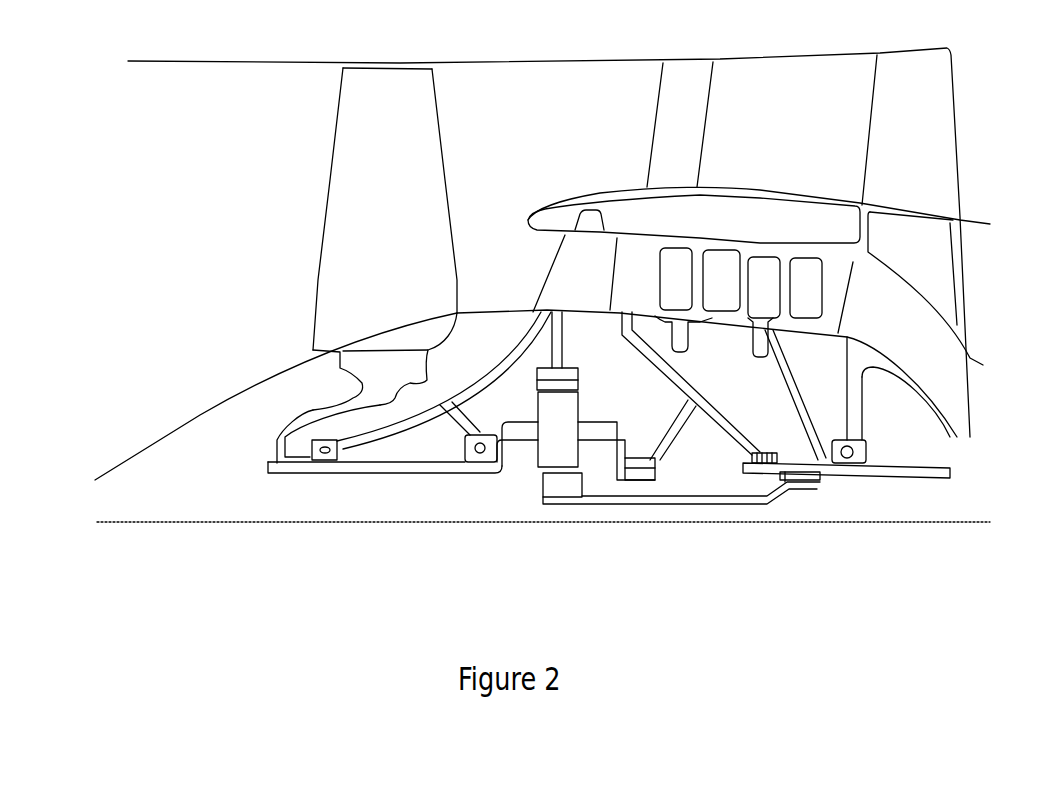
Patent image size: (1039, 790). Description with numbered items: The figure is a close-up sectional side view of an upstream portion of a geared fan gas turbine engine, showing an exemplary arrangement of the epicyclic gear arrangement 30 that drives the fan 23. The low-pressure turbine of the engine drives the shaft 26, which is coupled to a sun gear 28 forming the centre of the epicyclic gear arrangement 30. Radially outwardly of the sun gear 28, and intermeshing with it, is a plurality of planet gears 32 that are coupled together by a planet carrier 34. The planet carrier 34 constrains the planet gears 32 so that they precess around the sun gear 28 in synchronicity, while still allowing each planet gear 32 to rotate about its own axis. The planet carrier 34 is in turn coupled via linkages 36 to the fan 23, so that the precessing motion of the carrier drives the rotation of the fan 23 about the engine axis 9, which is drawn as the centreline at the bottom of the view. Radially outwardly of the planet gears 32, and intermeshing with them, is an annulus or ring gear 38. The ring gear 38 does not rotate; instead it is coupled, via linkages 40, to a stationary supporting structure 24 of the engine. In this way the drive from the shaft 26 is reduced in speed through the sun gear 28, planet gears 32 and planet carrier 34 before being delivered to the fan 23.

The engine axis 9 is at (280, 523).
The fan 23 is at (355, 249).
The stationary supporting structure 24 is at (573, 271).
The shaft 26 is at (835, 478).
The sun gear 28 is at (560, 490).
The epicyclic gear arrangement 30 is at (520, 450).
The planet gears 32 is at (548, 452).
The planet carrier 34 is at (605, 462).
The linkages 36 is at (497, 473).
The ring gear 38 is at (537, 383).
The linkages 40 is at (560, 337).